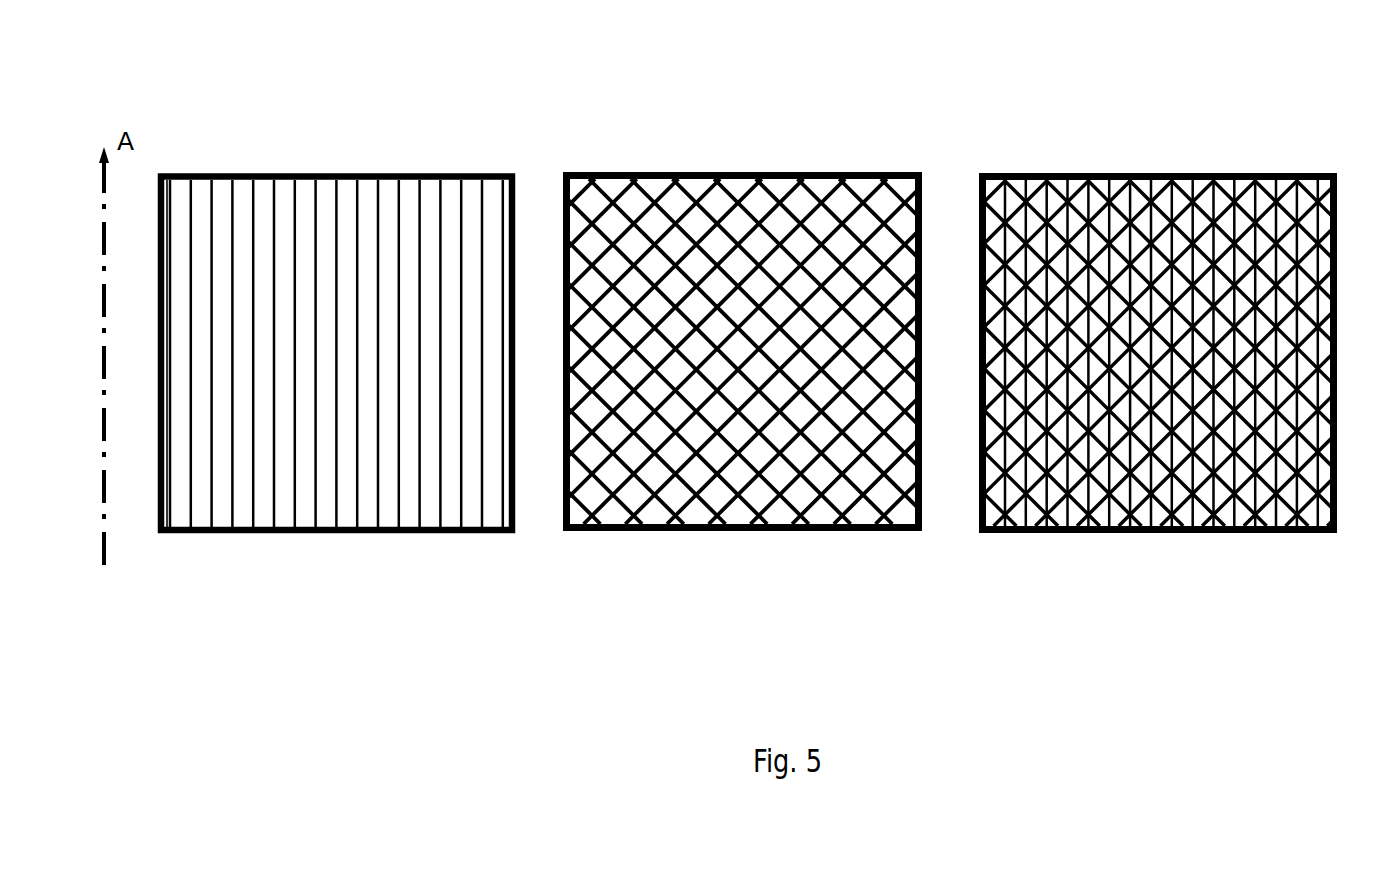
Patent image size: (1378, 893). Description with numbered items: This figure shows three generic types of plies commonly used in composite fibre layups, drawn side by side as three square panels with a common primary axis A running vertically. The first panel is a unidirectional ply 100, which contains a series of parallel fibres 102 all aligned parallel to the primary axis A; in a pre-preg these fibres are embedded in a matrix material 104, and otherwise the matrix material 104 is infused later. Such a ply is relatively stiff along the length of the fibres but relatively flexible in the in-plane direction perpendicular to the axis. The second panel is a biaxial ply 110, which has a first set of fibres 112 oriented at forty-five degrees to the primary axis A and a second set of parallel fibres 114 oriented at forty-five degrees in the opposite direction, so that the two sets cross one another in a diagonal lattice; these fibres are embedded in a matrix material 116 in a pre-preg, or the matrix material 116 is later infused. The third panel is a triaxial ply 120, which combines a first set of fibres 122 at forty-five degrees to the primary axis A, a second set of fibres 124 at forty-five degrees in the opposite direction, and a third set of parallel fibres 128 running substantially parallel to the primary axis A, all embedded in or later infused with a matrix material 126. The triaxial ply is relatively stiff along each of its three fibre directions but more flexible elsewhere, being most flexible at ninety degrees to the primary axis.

The unidirectional ply 100 is at (259, 155).
The parallel fibres 102 is at (399, 496).
The matrix material 104 is at (263, 495).
The biaxial ply 110 is at (650, 154).
The first set of fibres 112 is at (635, 490).
The second set of parallel fibres 114 is at (643, 490).
The matrix material 116 is at (890, 497).
The triaxial ply 120 is at (1073, 154).
The first set of fibres 122 is at (1080, 490).
The second set of fibres 124 is at (1092, 490).
The matrix material 126 is at (1242, 518).
The third set of parallel fibres 128 is at (1307, 498).